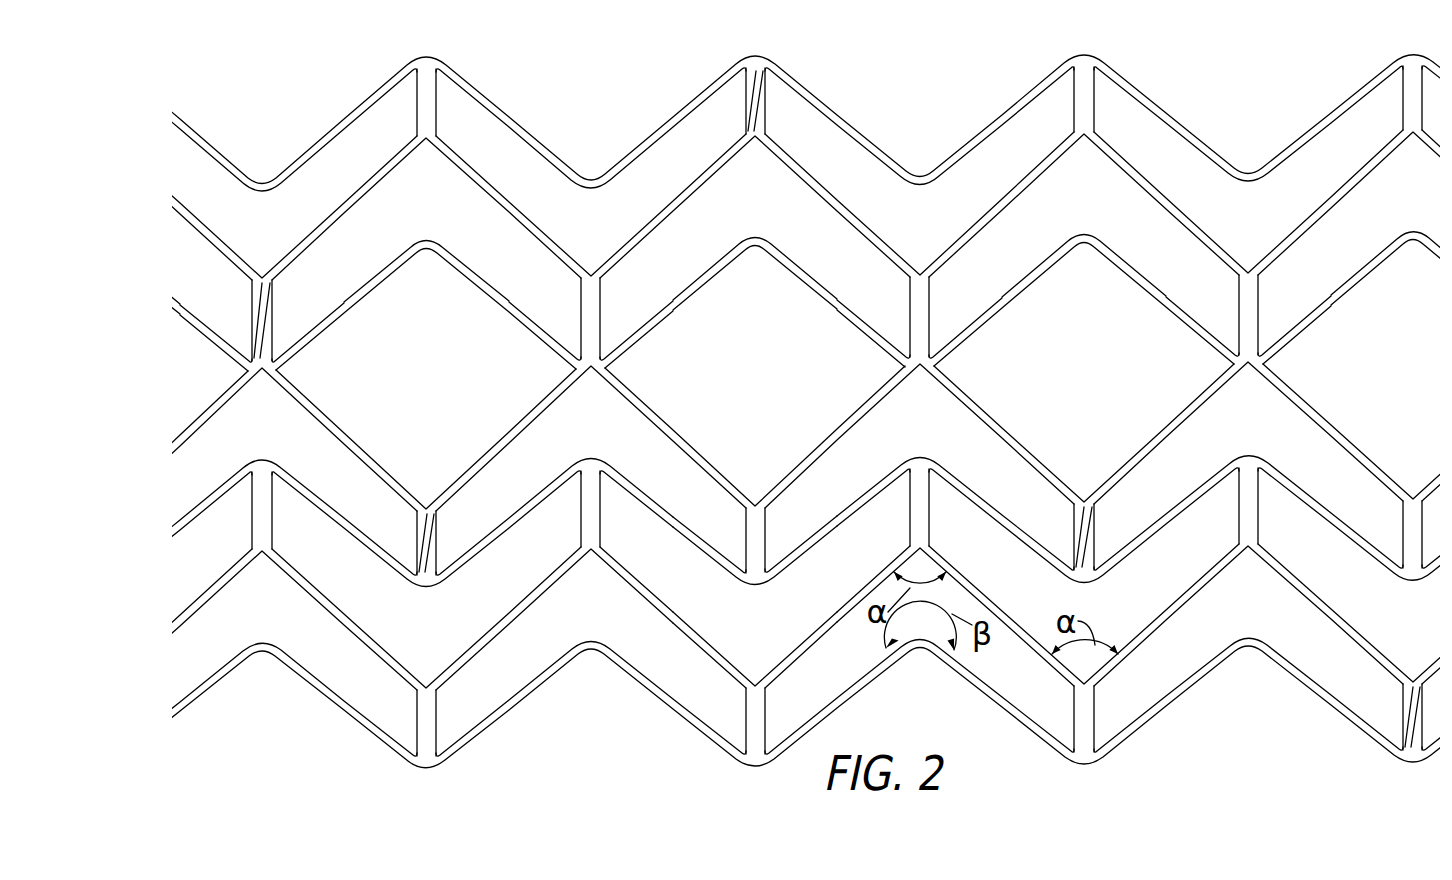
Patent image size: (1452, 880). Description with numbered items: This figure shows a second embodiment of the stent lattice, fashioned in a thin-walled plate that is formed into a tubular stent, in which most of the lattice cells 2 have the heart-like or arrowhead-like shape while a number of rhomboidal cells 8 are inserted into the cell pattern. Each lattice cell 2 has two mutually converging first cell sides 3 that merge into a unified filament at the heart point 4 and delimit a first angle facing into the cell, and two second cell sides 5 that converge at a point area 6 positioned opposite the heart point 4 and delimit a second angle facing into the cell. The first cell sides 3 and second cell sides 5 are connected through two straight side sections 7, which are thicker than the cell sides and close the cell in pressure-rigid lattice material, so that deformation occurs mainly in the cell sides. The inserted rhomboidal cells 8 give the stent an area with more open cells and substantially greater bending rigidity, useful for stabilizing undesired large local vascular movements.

The lattice cell 2 is at (412, 217).
The first cell sides 3 is at (1195, 600).
The heart point 4 is at (758, 682).
The second cell sides 5 is at (1197, 490).
The point area 6 is at (752, 583).
The side sections 7 is at (1105, 517).
The rhomboidal cells 8 is at (410, 374).